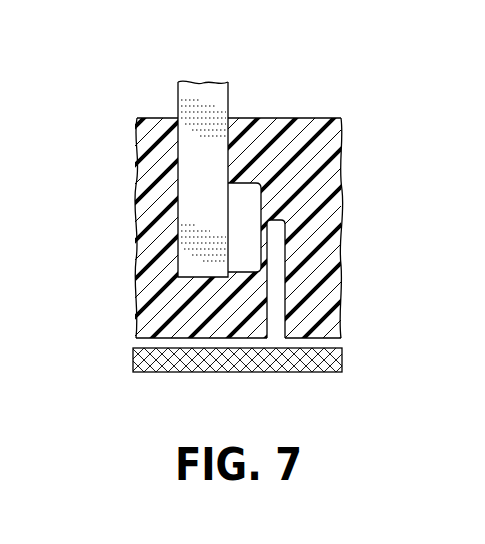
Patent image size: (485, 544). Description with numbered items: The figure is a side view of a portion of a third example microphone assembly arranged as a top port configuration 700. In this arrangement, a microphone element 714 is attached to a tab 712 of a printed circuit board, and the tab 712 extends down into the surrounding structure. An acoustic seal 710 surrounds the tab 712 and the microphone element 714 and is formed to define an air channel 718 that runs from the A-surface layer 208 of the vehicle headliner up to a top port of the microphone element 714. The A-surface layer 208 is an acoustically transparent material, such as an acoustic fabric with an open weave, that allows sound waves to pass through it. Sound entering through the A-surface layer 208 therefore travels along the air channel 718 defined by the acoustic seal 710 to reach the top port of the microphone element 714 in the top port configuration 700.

The top port configuration 700 is at (149, 62).
The acoustic seal 710 is at (137, 237).
The tab 712 is at (177, 153).
The microphone element 714 is at (267, 192).
The air channel 718 is at (275, 332).
The A-surface layer 208 is at (134, 358).